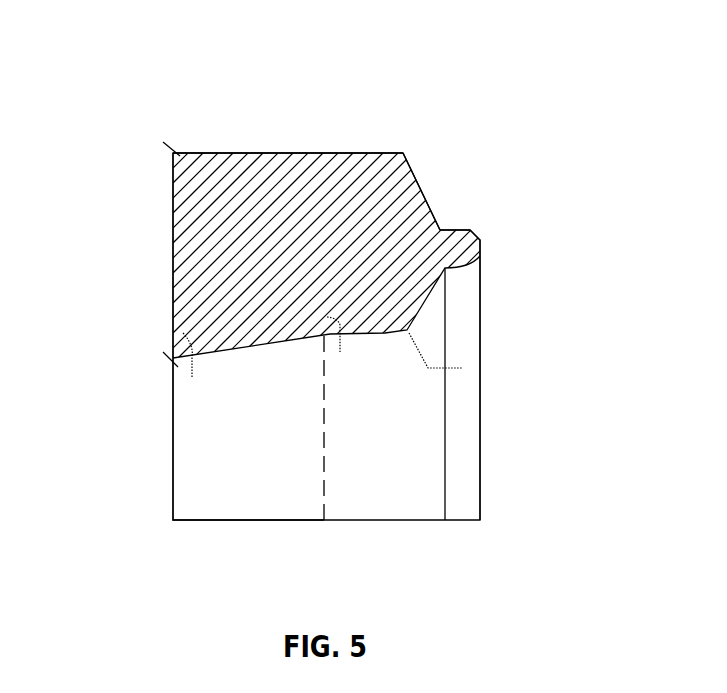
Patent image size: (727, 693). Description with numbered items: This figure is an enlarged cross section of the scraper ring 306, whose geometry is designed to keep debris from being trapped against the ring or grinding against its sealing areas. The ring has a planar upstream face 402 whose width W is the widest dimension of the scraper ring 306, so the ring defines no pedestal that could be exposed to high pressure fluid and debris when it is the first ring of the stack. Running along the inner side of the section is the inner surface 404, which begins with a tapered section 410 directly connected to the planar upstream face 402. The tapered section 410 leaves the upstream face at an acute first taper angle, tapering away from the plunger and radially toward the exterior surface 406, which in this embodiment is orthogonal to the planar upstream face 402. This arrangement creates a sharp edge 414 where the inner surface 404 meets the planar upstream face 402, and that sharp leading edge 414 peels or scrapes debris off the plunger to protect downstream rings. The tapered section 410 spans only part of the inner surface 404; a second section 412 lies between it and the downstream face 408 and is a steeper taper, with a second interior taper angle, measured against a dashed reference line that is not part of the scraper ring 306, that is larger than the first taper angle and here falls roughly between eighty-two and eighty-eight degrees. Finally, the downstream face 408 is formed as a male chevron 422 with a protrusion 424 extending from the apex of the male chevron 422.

The scraper ring 306 is at (522, 450).
The planar upstream face 402 is at (175, 208).
The inner surface 404 is at (307, 477).
The exterior surface 406 is at (292, 150).
The downstream face 408 is at (442, 212).
The tapered section 410 is at (227, 448).
The second section 412 is at (413, 440).
The sharp edge 414 is at (168, 358).
The male chevron 422 is at (432, 181).
The protrusion 424 is at (474, 238).